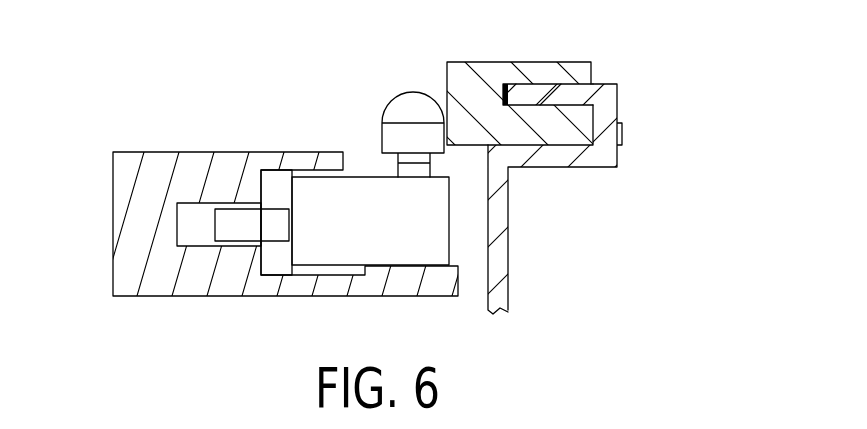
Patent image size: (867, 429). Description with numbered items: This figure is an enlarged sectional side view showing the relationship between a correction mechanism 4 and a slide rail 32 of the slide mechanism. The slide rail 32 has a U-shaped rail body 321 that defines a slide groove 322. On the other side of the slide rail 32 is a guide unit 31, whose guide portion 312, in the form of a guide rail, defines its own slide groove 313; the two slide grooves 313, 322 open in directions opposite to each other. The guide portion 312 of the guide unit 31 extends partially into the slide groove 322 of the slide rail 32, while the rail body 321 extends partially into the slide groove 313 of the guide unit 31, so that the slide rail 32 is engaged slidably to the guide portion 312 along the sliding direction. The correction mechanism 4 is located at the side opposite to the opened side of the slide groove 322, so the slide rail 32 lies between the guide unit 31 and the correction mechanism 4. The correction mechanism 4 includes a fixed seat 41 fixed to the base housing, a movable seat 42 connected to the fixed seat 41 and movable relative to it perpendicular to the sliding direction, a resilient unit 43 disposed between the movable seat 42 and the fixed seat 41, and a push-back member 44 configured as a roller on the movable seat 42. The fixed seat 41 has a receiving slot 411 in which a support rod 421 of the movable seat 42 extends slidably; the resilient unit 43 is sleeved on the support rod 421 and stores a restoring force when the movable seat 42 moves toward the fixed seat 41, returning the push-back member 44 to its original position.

The correction mechanism 4 is at (135, 128).
The fixed seat 41 is at (145, 197).
The receiving slot 411 is at (185, 227).
The support rod 421 is at (242, 227).
The movable seat 42 is at (421, 233).
The resilient unit 43 is at (266, 232).
The push-back member 44 is at (405, 110).
The guide unit 31 is at (585, 183).
The guide portion 312 is at (603, 100).
The slide groove 313 is at (590, 148).
The slide rail 32 is at (587, 50).
The rail body 321 is at (467, 90).
The slide groove 322 is at (505, 88).